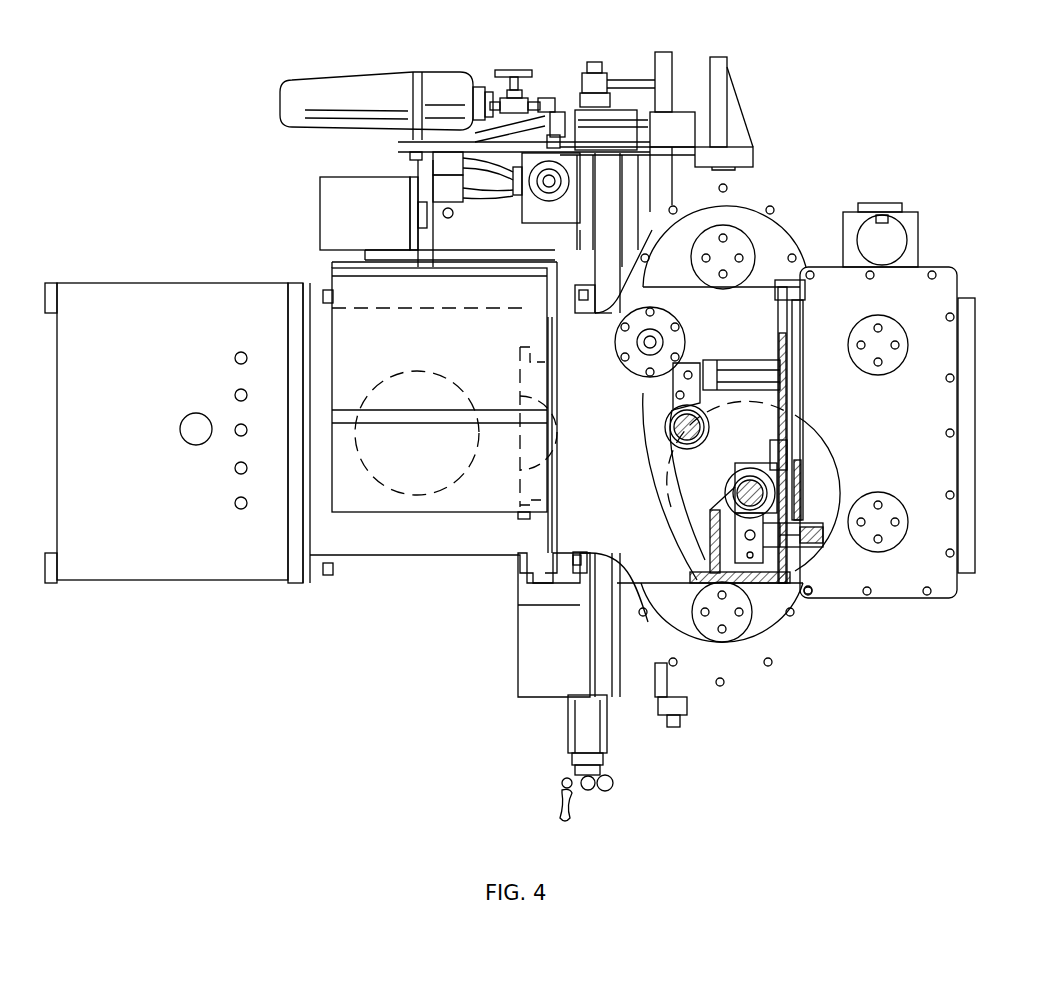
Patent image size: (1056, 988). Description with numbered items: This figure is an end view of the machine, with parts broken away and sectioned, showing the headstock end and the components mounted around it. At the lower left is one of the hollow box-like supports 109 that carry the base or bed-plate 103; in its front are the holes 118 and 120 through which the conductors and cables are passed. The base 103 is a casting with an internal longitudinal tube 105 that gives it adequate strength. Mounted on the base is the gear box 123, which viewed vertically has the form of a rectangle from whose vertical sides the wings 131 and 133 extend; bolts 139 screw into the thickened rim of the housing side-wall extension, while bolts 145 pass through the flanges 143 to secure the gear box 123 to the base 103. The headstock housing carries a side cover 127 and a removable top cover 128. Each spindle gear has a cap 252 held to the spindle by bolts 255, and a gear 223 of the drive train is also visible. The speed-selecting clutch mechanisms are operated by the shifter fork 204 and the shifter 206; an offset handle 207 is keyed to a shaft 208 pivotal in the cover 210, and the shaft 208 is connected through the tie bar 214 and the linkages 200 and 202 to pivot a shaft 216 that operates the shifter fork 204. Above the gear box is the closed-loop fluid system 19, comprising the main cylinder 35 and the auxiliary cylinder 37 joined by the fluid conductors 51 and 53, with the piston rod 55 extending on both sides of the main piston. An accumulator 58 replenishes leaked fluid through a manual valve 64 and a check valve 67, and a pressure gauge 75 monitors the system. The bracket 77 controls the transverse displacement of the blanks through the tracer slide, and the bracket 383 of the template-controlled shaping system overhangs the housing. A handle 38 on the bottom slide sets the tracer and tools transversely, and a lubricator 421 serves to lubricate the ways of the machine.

The closed-loop fluid system 19 is at (545, 60).
The main cylinder 35 is at (612, 90).
The auxiliary cylinder 37 is at (566, 206).
The handle 38 is at (562, 800).
The fluid conductor 51 is at (472, 216).
The fluid conductor 53 is at (438, 164).
The piston rod 55 is at (590, 262).
The accumulator 58 is at (280, 98).
The manual valve 64 is at (508, 71).
The check valve 67 is at (580, 140).
The pressure gauge 75 is at (564, 94).
The bracket 77 is at (666, 78).
The base 103 is at (450, 558).
The longitudinal tube 105 is at (410, 500).
The hollow box-like support 109 is at (160, 580).
The holes 118 is at (242, 467).
The hole 120 is at (188, 427).
The gear box 123 is at (667, 590).
The cover 127 is at (958, 356).
The removable cover 128 is at (974, 421).
The wing 131 is at (748, 670).
The wing 133 is at (782, 216).
The bolts 139 is at (713, 682).
The flanges 143 is at (560, 590).
The bolts 145 is at (580, 595).
The linkage 200 is at (792, 556).
The linkage 202 is at (788, 334).
The shifter fork 204 is at (664, 387).
The shifter 206 is at (732, 528).
The offset handle 207 is at (798, 545).
The shaft 208 is at (816, 499).
The cover 210 is at (792, 428).
The tie bar 214 is at (802, 456).
The shaft 216 is at (794, 391).
The gear 223 is at (674, 524).
The cap 252 is at (905, 542).
The bolts 255 is at (880, 326).
The bracket 383 is at (742, 108).
The lubricator 421 is at (332, 205).